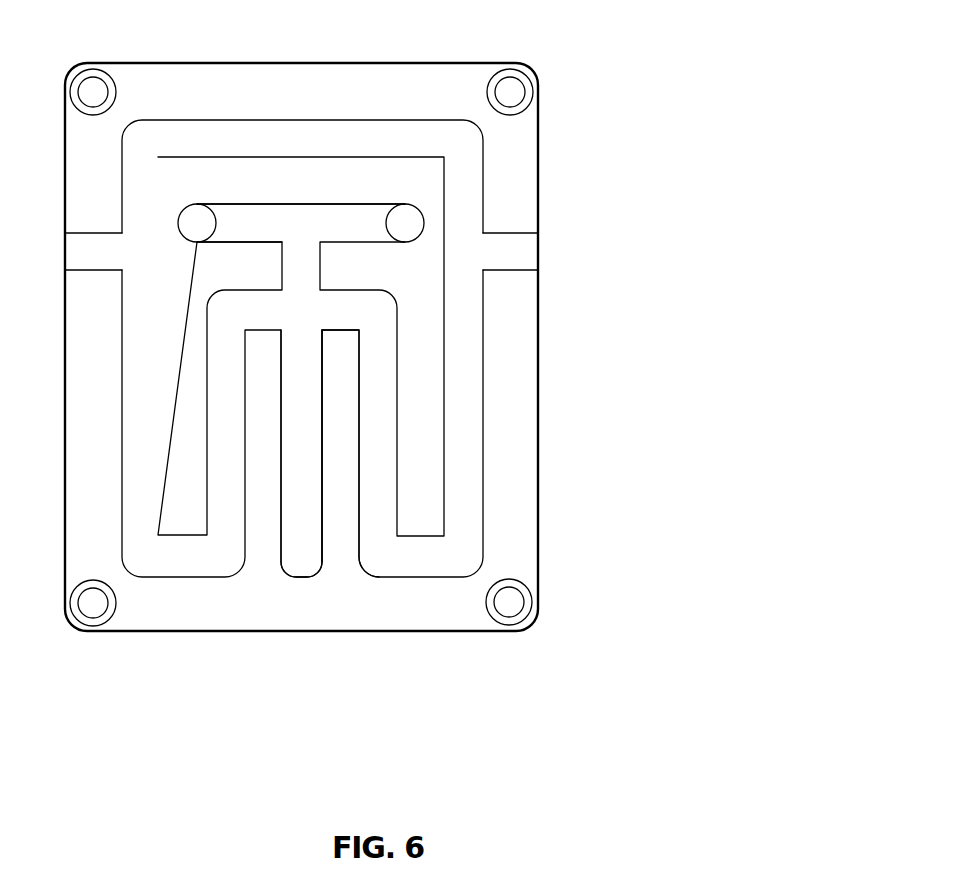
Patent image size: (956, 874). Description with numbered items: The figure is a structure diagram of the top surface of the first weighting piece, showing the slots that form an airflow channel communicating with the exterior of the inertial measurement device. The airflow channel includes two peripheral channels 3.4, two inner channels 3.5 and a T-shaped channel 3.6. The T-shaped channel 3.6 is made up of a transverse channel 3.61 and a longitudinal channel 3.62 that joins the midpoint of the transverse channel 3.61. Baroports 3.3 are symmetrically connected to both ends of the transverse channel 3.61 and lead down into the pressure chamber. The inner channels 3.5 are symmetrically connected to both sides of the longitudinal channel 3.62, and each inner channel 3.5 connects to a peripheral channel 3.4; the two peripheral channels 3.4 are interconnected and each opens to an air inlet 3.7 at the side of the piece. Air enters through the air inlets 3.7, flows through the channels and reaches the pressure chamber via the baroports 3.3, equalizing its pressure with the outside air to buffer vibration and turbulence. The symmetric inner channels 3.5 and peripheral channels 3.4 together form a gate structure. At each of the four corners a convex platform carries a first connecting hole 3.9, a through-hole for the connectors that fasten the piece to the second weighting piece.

The baroport 3.3 is at (412, 223).
The peripheral channel 3.4 is at (462, 427).
The inner channel 3.5 is at (378, 485).
The T-shaped channel 3.6 is at (281, 245).
The transverse channel 3.61 is at (247, 222).
The longitudinal channel 3.62 is at (303, 515).
The air inlet 3.7 is at (527, 260).
The first connecting hole 3.9 is at (95, 605).